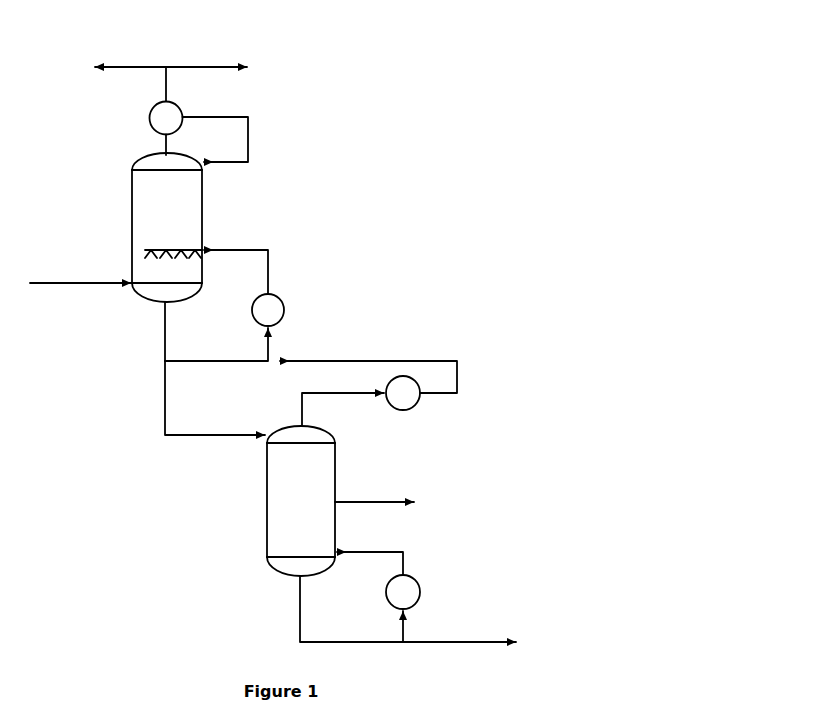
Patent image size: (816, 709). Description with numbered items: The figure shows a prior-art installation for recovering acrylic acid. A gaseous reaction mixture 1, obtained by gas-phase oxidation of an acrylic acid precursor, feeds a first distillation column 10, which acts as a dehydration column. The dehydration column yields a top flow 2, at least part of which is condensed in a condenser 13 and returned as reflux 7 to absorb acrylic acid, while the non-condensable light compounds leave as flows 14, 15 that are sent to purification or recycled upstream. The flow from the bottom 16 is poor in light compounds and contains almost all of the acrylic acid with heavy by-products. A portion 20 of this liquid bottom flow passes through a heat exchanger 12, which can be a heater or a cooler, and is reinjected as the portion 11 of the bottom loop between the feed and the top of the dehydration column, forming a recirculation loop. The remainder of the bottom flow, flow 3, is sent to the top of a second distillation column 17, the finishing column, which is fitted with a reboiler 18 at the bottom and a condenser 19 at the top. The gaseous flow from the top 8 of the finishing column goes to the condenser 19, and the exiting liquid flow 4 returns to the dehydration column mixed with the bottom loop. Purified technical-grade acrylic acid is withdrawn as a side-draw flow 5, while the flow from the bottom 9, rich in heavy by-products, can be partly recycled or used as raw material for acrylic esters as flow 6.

The gaseous reaction mixture 1 is at (80, 266).
The top flow 2 is at (178, 84).
The flow 3 is at (215, 398).
The liquid flow 4 is at (368, 363).
The flow 5 is at (374, 488).
The flow 6 is at (459, 629).
The reflux 7 is at (228, 139).
The flow from the top 8 is at (343, 409).
The flow from the bottom 9 is at (334, 609).
The first distillation column 10 is at (167, 227).
The portion of the bottom loop 11 is at (251, 272).
The heat exchanger 12 is at (268, 310).
The condenser 13 is at (166, 129).
The flow 14 is at (130, 53).
The flow 15 is at (206, 53).
The flow from the bottom 16 is at (144, 331).
The second distillation column 17 is at (301, 501).
The reboiler 18 is at (378, 580).
The condenser 19 is at (403, 393).
The portion 20 is at (216, 344).